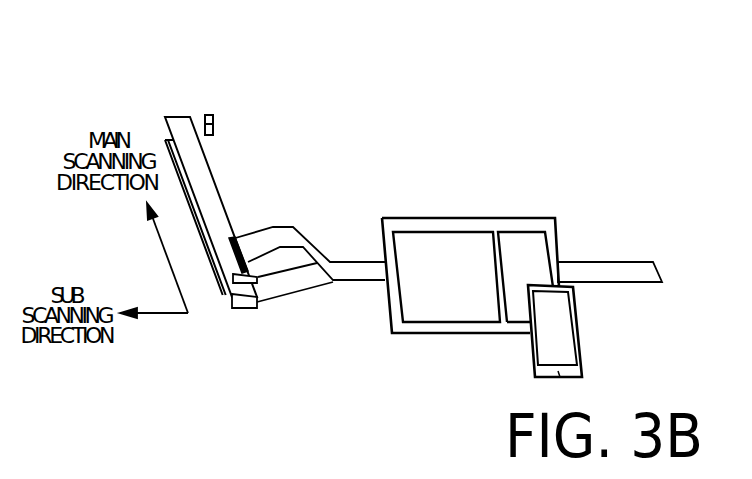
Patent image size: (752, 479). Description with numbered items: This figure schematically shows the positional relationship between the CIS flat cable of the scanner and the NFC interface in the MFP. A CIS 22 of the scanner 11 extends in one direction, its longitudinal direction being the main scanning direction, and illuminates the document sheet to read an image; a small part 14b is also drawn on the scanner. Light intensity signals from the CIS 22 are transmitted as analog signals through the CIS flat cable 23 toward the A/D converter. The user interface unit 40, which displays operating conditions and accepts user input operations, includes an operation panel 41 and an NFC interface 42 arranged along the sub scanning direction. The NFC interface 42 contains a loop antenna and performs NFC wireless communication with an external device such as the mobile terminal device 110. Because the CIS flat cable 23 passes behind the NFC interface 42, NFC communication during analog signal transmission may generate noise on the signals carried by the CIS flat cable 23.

The scanner 11 is at (247, 106).
The CIS 22 is at (163, 145).
The sensor 14b is at (213, 123).
The CIS flat cable 23 is at (367, 283).
The user interface unit 40 is at (415, 227).
The operation panel 41 is at (452, 242).
The NFC interface 42 is at (524, 245).
The mobile terminal device 110 is at (575, 332).